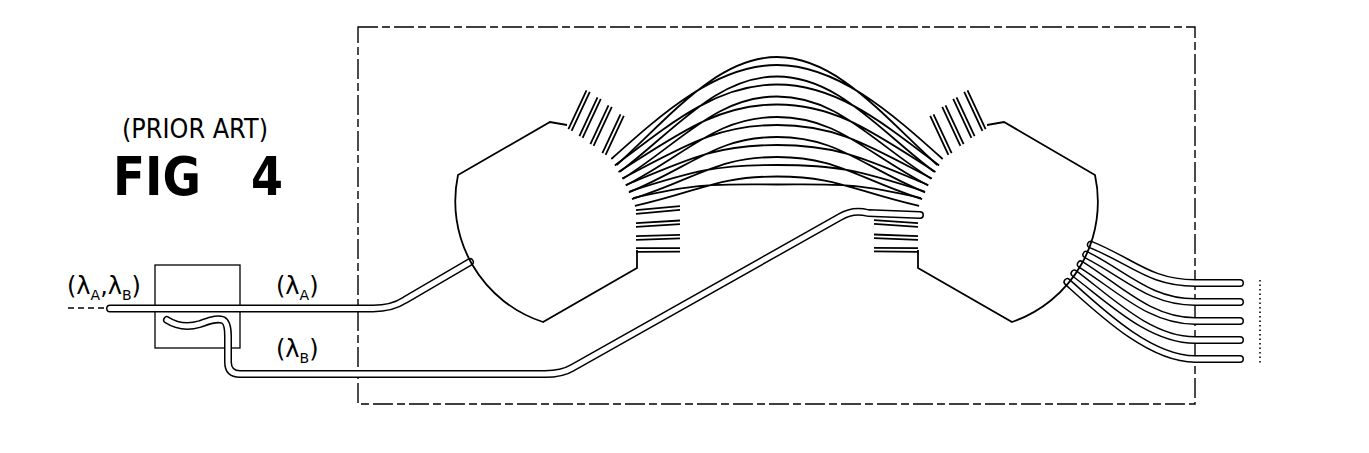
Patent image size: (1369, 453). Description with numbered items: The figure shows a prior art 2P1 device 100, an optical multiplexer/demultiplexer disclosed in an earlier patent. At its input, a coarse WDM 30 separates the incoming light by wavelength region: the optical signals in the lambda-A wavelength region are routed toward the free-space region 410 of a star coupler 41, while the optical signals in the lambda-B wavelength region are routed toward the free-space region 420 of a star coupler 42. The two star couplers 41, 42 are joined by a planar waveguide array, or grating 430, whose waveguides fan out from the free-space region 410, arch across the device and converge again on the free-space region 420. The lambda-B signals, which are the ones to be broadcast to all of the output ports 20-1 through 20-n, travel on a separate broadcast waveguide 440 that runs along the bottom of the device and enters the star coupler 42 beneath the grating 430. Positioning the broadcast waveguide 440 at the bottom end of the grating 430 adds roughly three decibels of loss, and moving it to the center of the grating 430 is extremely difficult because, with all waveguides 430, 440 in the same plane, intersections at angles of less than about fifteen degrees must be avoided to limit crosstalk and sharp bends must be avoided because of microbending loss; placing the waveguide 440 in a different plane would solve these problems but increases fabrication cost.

The 2P1 device 100 is at (358, 45).
The coarse WDM 30 is at (200, 265).
The star coupler 41 is at (567, 206).
The star coupler 42 is at (986, 206).
The free-space region 410 is at (564, 228).
The free-space region 420 is at (1024, 228).
The planar waveguide array (grating) 430 is at (838, 193).
The broadcast waveguide 440 is at (473, 370).
The output port 20-1 is at (1215, 279).
The output port 20-n is at (1215, 366).